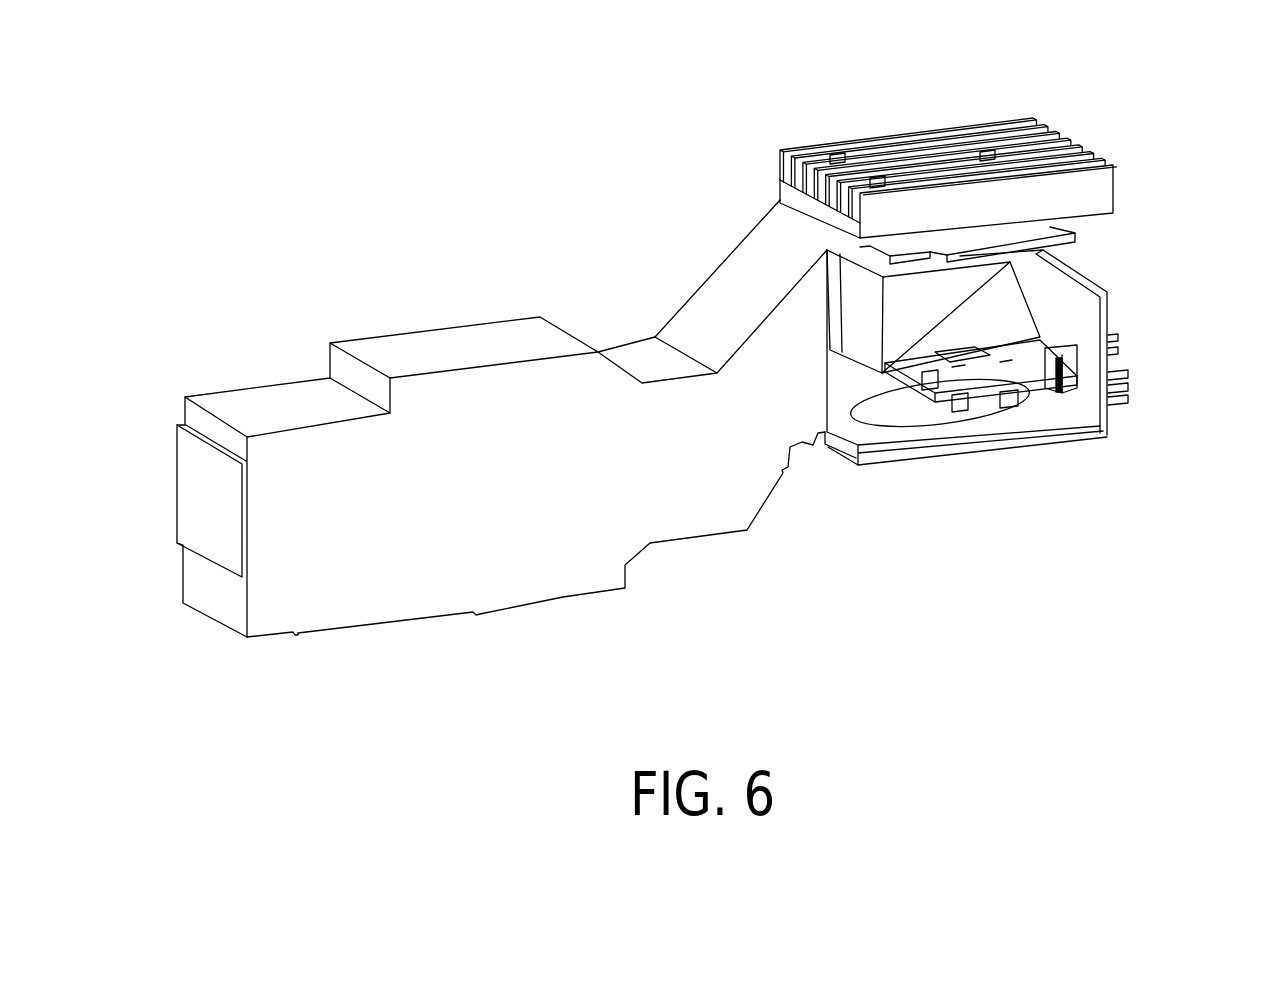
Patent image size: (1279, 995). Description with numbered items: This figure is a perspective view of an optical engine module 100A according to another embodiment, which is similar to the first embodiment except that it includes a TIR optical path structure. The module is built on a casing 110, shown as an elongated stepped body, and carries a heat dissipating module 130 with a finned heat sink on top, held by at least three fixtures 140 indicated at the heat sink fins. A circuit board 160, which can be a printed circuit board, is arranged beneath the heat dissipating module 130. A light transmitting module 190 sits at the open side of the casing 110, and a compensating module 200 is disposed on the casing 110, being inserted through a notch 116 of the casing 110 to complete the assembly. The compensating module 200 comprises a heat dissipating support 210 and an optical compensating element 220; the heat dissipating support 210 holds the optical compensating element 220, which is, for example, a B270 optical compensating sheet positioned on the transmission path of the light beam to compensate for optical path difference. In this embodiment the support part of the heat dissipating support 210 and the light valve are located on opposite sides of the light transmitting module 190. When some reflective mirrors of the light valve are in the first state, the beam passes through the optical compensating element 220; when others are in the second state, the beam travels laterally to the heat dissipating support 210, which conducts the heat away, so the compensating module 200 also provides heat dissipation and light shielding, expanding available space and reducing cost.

The optical engine module 100A is at (1258, 683).
The casing 110 is at (623, 347).
The notch 116 is at (1093, 372).
The heat dissipating module 130 is at (1100, 188).
The fixtures 140 is at (987, 160).
The circuit board 160 is at (1068, 228).
The light transmitting module 190 is at (850, 297).
The compensating module 200 is at (636, 297).
The heat dissipating support 210 is at (1042, 372).
The optical compensating element 220 is at (920, 385).